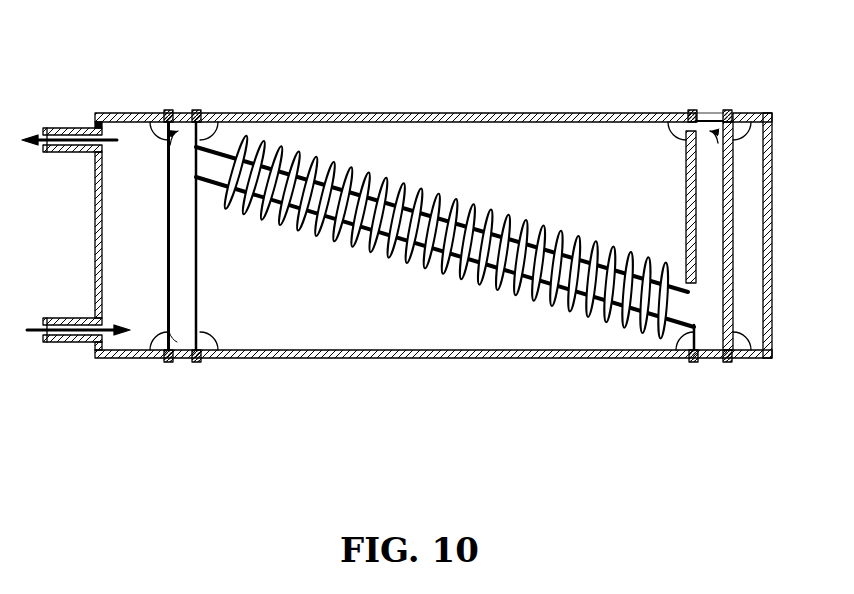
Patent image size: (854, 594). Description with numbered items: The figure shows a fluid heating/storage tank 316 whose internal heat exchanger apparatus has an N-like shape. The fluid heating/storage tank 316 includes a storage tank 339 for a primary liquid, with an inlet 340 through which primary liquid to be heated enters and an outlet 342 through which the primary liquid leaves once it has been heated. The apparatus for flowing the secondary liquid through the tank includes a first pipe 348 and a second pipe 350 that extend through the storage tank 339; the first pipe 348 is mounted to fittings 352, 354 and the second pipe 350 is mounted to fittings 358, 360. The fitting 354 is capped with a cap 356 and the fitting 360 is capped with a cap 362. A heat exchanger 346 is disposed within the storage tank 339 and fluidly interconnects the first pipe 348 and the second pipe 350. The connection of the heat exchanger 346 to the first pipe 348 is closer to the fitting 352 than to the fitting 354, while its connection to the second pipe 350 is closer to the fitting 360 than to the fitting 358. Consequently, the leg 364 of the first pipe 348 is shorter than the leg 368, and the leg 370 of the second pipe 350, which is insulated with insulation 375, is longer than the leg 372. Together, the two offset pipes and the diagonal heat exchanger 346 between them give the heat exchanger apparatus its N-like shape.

The fluid heating/storage tank 316 is at (482, 90).
The storage tank 339 is at (771, 197).
The inlet 340 is at (73, 343).
The outlet 342 is at (73, 128).
The heat exchanger 346 is at (473, 183).
The first pipe 348 is at (166, 232).
The second pipe 350 is at (734, 231).
The fitting 352 is at (160, 132).
The fitting 354 is at (181, 337).
The cap 356 is at (188, 360).
The fitting 358 is at (729, 122).
The fitting 360 is at (710, 336).
The cap 362 is at (698, 358).
The leg 364 is at (221, 130).
The leg 368 is at (199, 322).
The leg 370 is at (686, 155).
The leg 372 is at (688, 338).
The insulation 375 is at (763, 292).